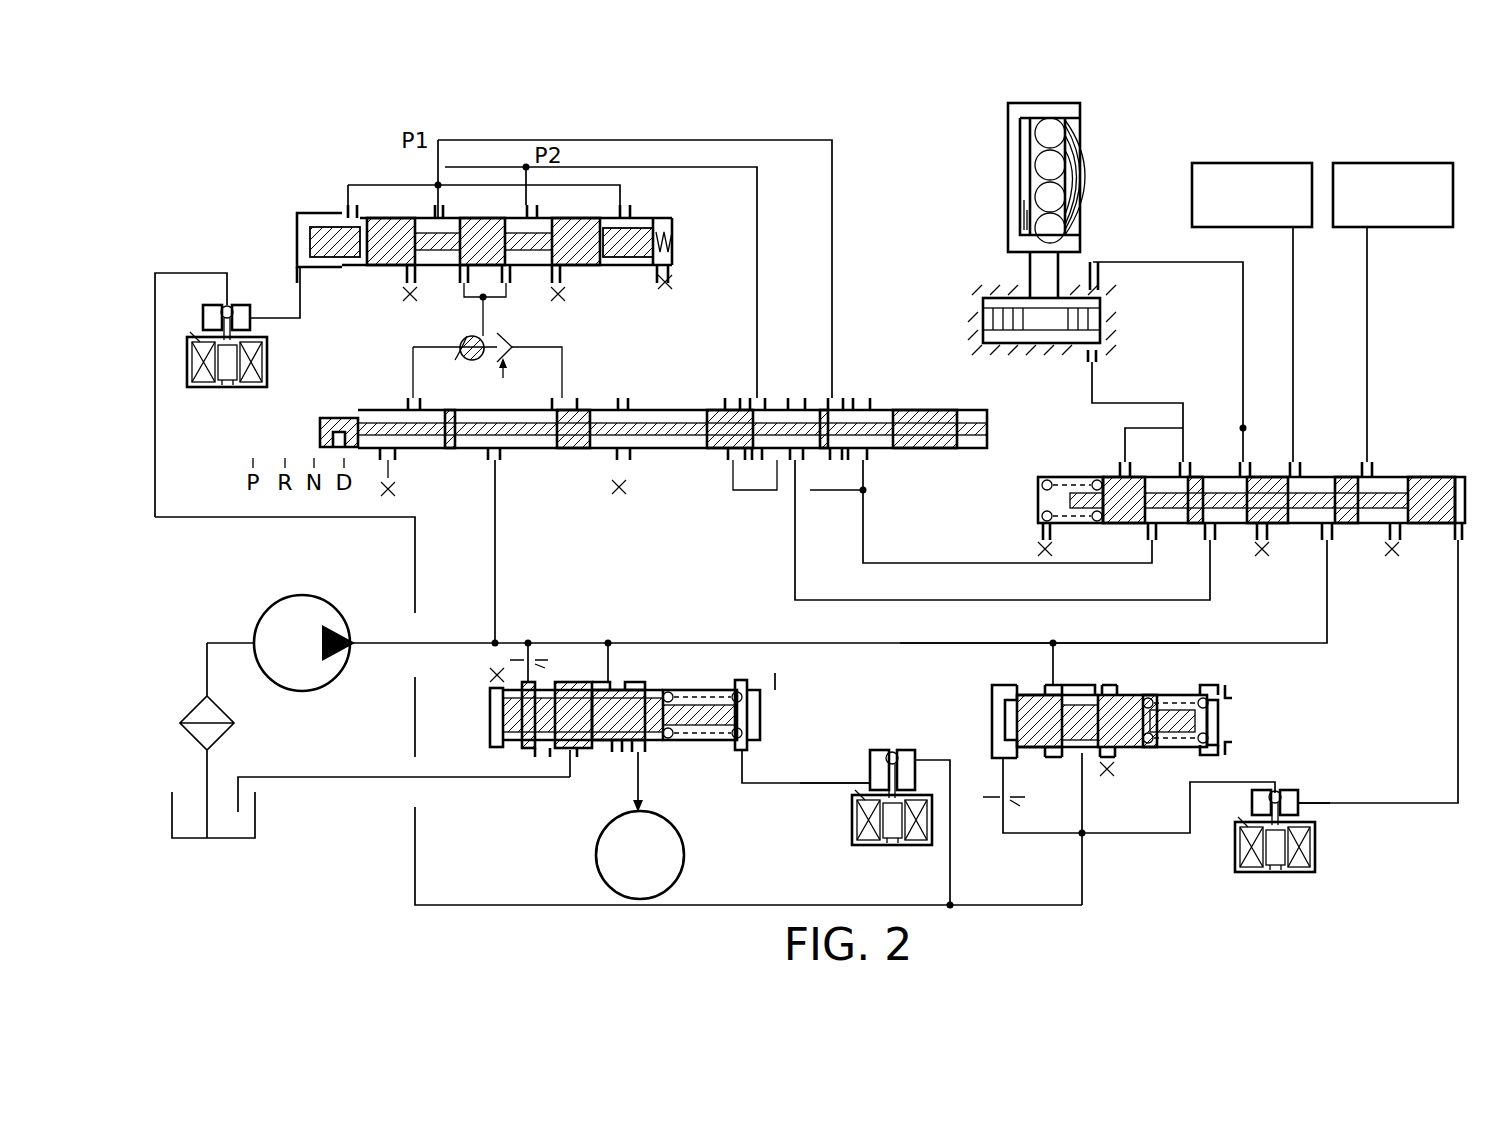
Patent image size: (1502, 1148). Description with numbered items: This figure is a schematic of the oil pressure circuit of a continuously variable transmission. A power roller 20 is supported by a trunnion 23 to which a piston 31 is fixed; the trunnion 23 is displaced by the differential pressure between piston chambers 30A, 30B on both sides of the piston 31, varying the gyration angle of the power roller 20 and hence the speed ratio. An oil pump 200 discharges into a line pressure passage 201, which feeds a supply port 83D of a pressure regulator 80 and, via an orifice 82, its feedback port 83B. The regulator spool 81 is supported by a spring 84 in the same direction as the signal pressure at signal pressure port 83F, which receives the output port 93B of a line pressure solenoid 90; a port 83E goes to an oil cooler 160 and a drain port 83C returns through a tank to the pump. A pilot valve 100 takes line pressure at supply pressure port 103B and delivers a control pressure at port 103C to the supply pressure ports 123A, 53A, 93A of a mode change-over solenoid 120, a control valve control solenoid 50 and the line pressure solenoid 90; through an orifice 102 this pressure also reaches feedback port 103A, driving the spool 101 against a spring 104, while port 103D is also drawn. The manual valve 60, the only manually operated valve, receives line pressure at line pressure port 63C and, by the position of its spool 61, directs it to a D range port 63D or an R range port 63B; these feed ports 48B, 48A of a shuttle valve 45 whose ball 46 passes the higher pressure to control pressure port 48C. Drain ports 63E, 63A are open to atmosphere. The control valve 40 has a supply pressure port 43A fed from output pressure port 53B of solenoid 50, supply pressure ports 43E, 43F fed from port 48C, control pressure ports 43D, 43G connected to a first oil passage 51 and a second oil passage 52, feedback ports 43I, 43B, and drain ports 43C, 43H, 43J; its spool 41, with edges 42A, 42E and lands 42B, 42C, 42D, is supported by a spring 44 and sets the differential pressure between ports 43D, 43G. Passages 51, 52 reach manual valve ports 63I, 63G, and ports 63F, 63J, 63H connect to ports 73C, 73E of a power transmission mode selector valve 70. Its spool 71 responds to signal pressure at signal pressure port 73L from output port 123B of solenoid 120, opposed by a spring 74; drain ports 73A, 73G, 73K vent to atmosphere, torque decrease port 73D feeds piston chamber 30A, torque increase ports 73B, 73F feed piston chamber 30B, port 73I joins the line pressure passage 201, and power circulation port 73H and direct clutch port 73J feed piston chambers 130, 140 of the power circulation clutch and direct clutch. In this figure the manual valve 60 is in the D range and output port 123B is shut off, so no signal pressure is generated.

The power roller 20 is at (1057, 177).
The trunnion 23 is at (1008, 180).
The piston chamber 30A is at (1100, 358).
The piston chamber 30B is at (1104, 296).
The piston 31 is at (982, 304).
The control valve 40 is at (473, 255).
The spool 41 is at (298, 243).
The edge 42A is at (335, 242).
The land 42B is at (391, 241).
The land 42C is at (482, 241).
The land 42D is at (576, 241).
The edge 42E is at (628, 242).
The supply pressure port 43A is at (292, 272).
The feedback port 43B is at (346, 205).
The drain port 43C is at (402, 284).
The control pressure port 43D is at (434, 206).
The supply pressure port 43E is at (458, 285).
The supply pressure port 43F is at (506, 279).
The control pressure port 43G is at (540, 207).
The drain port 43H is at (562, 287).
The feedback port 43I is at (636, 212).
The drain port 43J is at (672, 276).
The spring 44 is at (675, 240).
The shuttle valve 45 is at (503, 378).
The ball 46 is at (460, 362).
The port 48A is at (485, 372).
The port 48B is at (512, 347).
The control pressure port 48C is at (445, 341).
The control valve control solenoid 50 is at (240, 344).
The first oil passage 51 is at (626, 140).
The second oil passage 52 is at (665, 166).
The supply pressure port 53A is at (222, 298).
The output pressure port 53B is at (268, 326).
The manual valve 60 is at (676, 496).
The spool 61 is at (975, 420).
The drain port 63A is at (398, 460).
The R range port 63B is at (404, 400).
The line pressure port 63C is at (503, 460).
The D range port 63D is at (570, 398).
The drain port 63E is at (630, 400).
The port 63F is at (650, 462).
The port 63G is at (762, 398).
The port 63H is at (759, 476).
The port 63I is at (840, 398).
The port 63J is at (870, 462).
The power transmission mode selector valve 70 is at (1238, 615).
The spool 71 is at (1438, 482).
The drain port 73A is at (1040, 530).
The torque increase port 73B is at (1118, 466).
The port 73C is at (1146, 536).
The torque decrease port 73D is at (1190, 472).
The port 73E is at (1206, 536).
The torque increase port 73F is at (1252, 470).
The drain port 73G is at (1266, 546).
The power circulation port 73H is at (1302, 472).
The port 73I is at (1335, 540).
The direct clutch port 73J is at (1375, 468).
The drain port 73K is at (1396, 540).
The signal pressure port 73L is at (1462, 545).
The spring 74 is at (1040, 474).
The pressure regulator 80 is at (656, 739).
The spool 81 is at (490, 735).
The orifice 82 is at (538, 668).
The feedback port 83B is at (538, 760).
The drain port 83C is at (577, 760).
The supply port 83D is at (617, 752).
The port 83E is at (648, 752).
The signal pressure port 83F is at (748, 752).
The spring 84 is at (690, 696).
The line pressure solenoid 90 is at (875, 803).
The supply pressure port 93A is at (914, 756).
The output port 93B is at (842, 782).
The pilot valve 100 is at (1108, 739).
The spool 101 is at (992, 716).
The orifice 102 is at (1015, 806).
The feedback port 103A is at (1044, 752).
The supply pressure port 103B is at (1045, 688).
The control pressure port 103C is at (1088, 770).
The regulator valve port 103D is at (1118, 686).
The spring 104 is at (1218, 718).
The mode change-over solenoid 120 is at (1317, 825).
The supply pressure port 123A is at (1245, 788).
The output port 123B is at (1322, 805).
The piston chamber 130 is at (1258, 163).
The piston chamber 140 is at (1376, 163).
The oil cooler 160 is at (688, 846).
The oil pump 200 is at (268, 695).
The line pressure passage 201 is at (724, 642).